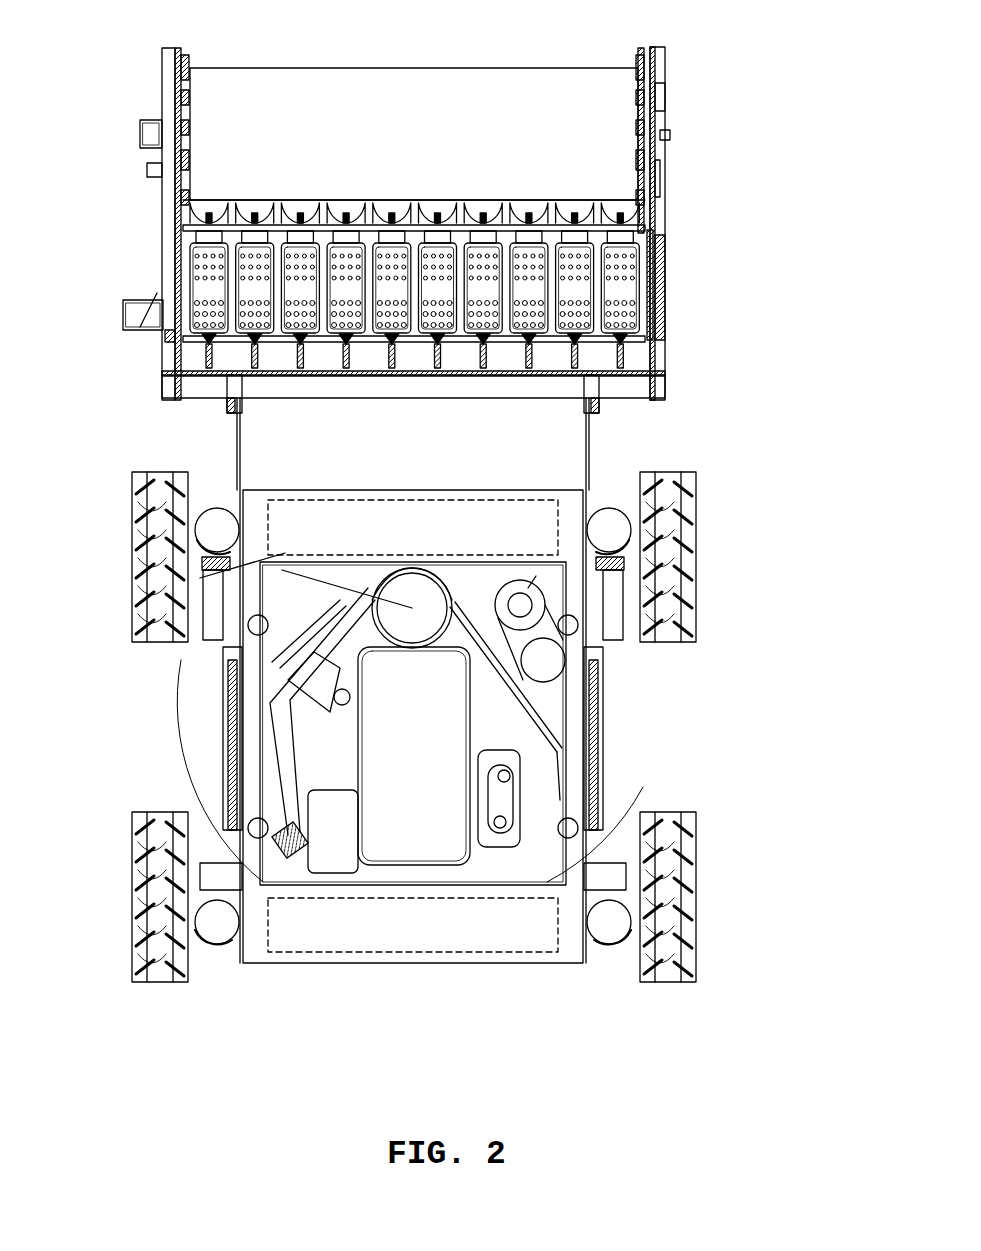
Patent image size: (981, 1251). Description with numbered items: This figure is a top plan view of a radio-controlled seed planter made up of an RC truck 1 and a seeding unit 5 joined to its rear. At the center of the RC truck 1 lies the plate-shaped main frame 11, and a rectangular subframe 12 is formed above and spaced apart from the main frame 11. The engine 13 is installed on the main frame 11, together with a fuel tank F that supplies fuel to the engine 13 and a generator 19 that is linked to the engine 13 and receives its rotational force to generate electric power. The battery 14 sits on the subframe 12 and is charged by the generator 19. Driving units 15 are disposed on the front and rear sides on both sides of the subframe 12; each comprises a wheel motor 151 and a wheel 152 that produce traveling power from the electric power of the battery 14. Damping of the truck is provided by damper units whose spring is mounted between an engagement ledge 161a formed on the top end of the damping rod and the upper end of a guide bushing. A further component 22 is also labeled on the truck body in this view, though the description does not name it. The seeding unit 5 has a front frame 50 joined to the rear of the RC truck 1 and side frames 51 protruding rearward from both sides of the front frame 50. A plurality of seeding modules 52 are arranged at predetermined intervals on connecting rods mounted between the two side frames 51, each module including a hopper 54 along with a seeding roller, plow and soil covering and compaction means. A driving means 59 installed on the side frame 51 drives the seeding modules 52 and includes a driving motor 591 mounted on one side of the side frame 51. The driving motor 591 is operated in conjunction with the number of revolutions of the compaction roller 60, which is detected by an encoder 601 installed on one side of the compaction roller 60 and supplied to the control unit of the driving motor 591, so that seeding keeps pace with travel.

The RC truck 1 is at (745, 642).
The seeding unit 5 is at (688, 214).
The front frame 50 is at (593, 455).
The side frames 51 is at (167, 208).
The seeding modules 52 is at (196, 268).
The hopper 54 is at (124, 322).
The driving means 59 is at (113, 386).
The driving motor 591 is at (137, 327).
The compaction roller 60 is at (430, 106).
The encoder 601 is at (140, 134).
The main frame 11 is at (213, 705).
The subframe 12 is at (250, 798).
The engine 13 is at (430, 738).
The battery 14 is at (386, 955).
The driving units 15 is at (365, 773).
The wheel motors 151 is at (216, 920).
The wheels 152 is at (132, 903).
The engagement ledge 161a is at (578, 827).
The generator 19 is at (190, 587).
The operating lever 22 is at (305, 705).
The fuel tank F is at (545, 652).